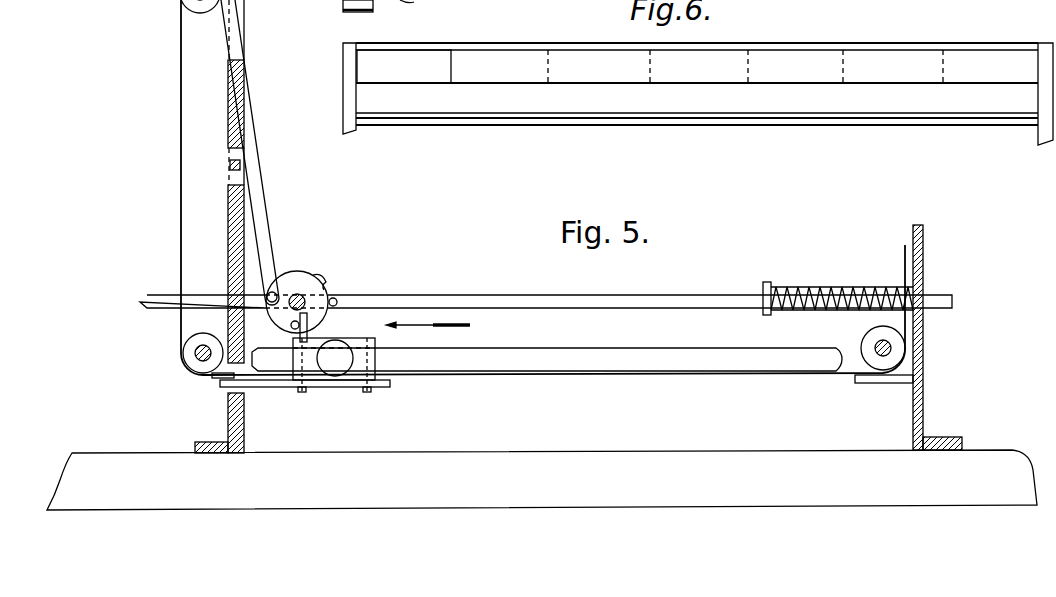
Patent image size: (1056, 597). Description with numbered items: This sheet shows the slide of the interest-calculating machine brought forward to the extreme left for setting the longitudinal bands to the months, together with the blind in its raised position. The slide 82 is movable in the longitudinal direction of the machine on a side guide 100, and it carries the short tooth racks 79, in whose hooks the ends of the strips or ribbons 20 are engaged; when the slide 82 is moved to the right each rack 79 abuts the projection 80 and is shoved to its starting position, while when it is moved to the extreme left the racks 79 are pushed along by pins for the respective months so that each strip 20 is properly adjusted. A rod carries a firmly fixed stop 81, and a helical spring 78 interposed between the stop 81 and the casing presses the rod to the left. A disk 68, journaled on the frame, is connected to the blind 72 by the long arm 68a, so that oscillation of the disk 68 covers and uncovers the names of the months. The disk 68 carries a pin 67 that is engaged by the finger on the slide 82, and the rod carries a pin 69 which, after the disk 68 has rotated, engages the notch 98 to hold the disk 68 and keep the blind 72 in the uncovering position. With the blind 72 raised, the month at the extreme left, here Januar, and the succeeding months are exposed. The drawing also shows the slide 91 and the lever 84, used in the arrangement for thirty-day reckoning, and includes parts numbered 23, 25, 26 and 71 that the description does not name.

In FIG. 5, the strips or ribbons 20 is at (180, 130).
In FIG. 5, the upper pulley 23 is at (180, 6).
In FIG. 5, the right guide pulley 25 is at (906, 339).
In FIG. 5, the left guide pulley 26 is at (185, 353).
In FIG. 5, the pin 67 is at (307, 325).
In FIG. 5, the disk 68 is at (300, 272).
In FIG. 5, the long arm 68a is at (253, 142).
In FIG. 5, the pin 69 is at (338, 300).
In FIG. 5, the rod 71 is at (681, 294).
In FIG. 6, the blind 72 is at (698, 94).
In FIG. 5, the helical spring 78 is at (842, 290).
In FIG. 5, the tooth rack 79 is at (274, 387).
In FIG. 5, the projection 80 is at (866, 383).
In FIG. 5, the stop 81 is at (771, 286).
In FIG. 5, the slide 82 is at (375, 344).
In FIG. 5, the lever 84 is at (428, 4).
In FIG. 5, the slide 91 is at (345, 8).
In FIG. 5, the notch 98 is at (320, 283).
In FIG. 5, the side guide 100 is at (470, 358).